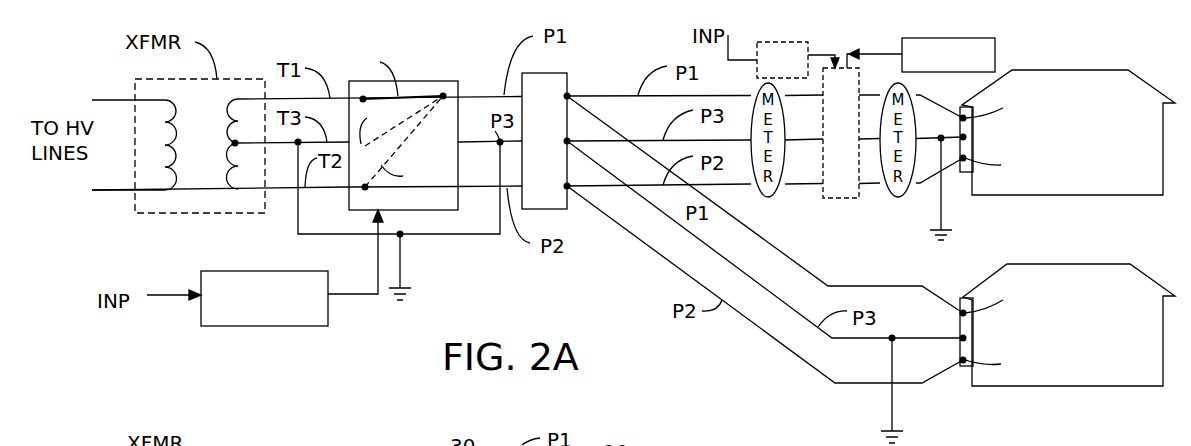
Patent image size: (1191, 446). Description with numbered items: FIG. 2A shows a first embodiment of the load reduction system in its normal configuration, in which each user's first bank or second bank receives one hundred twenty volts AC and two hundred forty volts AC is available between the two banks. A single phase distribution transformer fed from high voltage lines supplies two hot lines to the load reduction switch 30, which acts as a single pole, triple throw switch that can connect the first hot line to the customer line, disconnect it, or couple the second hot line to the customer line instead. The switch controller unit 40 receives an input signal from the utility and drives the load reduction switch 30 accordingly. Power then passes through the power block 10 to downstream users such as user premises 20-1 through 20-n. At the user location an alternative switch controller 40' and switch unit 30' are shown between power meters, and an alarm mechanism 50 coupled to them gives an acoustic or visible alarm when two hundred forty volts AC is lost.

The power block 10 is at (557, 72).
The load reduction switch 30 is at (411, 136).
The switch controller unit 40 is at (289, 280).
The switch controller 40' is at (782, 60).
The LRS unit 30' is at (831, 157).
The alarm mechanism 50 is at (945, 38).
The user premises 1 20-1 is at (963, 173).
The user premises n 20-n is at (963, 366).